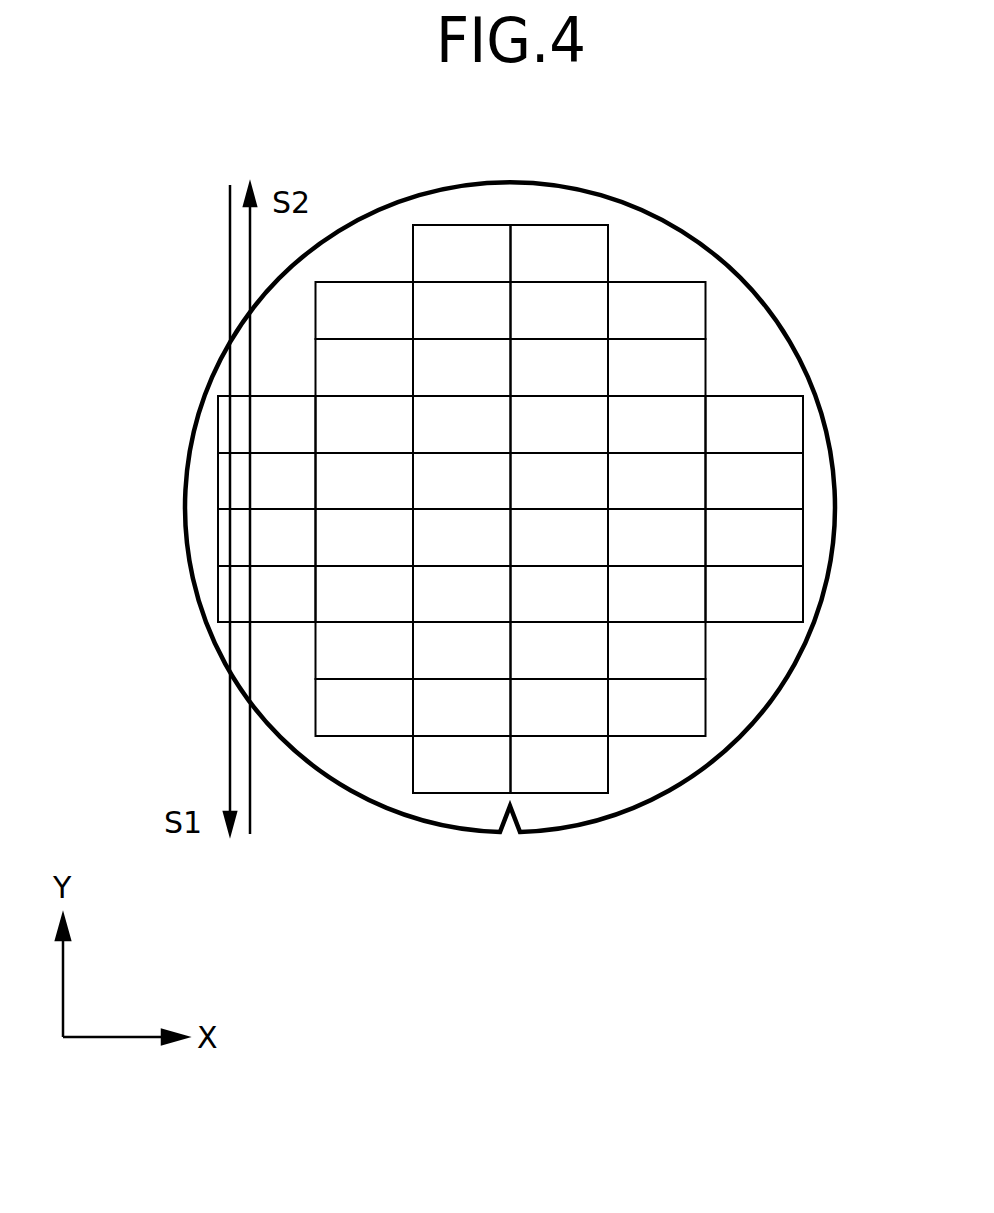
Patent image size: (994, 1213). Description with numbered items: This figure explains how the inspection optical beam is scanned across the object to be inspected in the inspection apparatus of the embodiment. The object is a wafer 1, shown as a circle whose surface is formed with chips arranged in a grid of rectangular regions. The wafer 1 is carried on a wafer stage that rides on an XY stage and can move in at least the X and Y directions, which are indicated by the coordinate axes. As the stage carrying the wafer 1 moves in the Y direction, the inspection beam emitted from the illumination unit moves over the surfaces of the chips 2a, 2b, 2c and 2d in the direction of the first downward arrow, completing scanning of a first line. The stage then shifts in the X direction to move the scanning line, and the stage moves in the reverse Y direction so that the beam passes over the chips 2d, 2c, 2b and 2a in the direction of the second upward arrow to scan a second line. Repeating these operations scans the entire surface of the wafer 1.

The wafer 1 is at (750, 286).
The chip 2a is at (218, 424).
The chip 2b is at (218, 481).
The chip 2c is at (218, 537).
The chip 2d is at (218, 594).